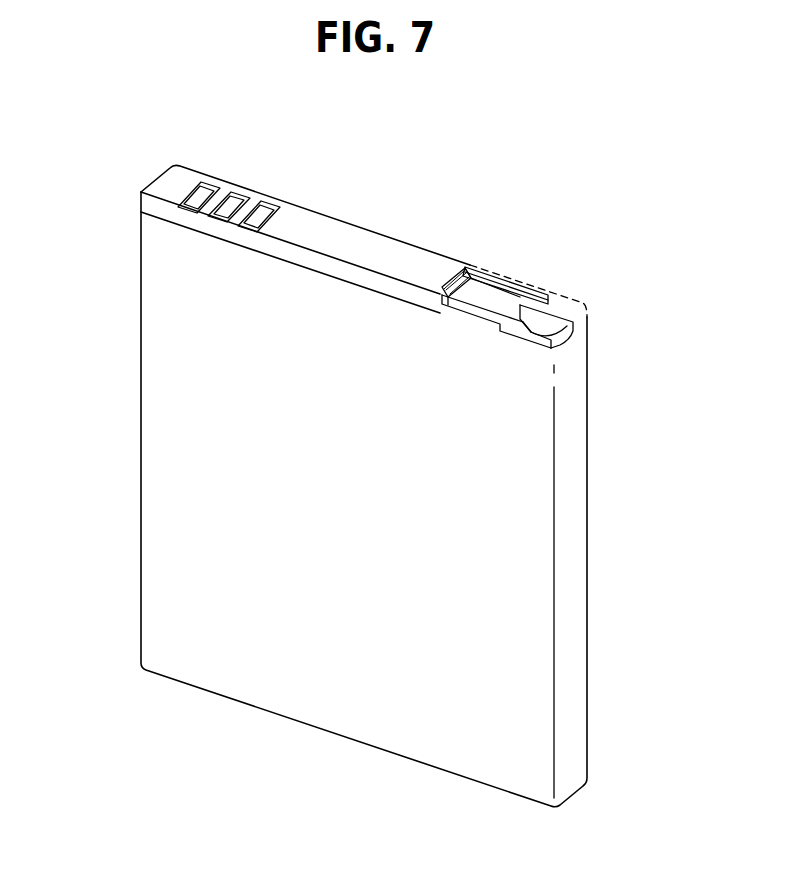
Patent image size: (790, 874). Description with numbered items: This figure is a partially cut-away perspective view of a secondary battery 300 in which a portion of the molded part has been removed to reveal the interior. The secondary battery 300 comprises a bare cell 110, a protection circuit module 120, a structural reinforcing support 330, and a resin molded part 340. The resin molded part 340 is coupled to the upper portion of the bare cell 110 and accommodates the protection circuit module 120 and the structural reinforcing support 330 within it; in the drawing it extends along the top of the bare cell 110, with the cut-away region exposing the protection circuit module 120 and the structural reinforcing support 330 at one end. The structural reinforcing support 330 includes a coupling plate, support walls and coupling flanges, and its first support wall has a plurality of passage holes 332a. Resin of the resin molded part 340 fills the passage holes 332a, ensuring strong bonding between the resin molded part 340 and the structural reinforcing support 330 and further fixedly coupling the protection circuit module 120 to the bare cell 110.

The secondary battery 300 is at (672, 150).
The bare cell 110 is at (140, 433).
The protection circuit module 120 is at (490, 270).
The structural reinforcing support 330 is at (509, 290).
The passage holes 332a is at (450, 308).
The resin molded part 340 is at (362, 243).